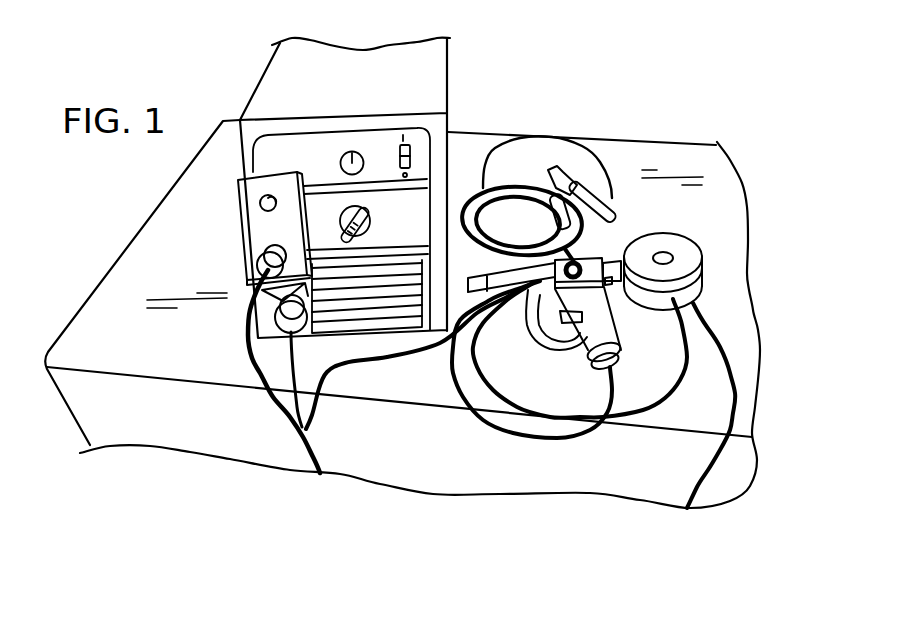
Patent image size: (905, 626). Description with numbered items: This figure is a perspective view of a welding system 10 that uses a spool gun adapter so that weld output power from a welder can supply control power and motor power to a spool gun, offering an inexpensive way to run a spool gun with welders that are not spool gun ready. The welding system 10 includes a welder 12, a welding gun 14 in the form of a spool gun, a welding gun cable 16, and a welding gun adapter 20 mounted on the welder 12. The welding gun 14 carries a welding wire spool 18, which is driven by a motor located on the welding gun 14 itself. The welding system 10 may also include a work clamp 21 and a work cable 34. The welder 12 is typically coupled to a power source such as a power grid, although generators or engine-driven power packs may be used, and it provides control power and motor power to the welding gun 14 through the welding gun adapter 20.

The welding system 10 is at (703, 58).
The welder 12 is at (433, 75).
The welding gun 14 is at (622, 258).
The welding gun cable 16 is at (740, 393).
The welding wire spool 18 is at (690, 247).
The welding gun adapter 20 is at (240, 230).
The work clamp 21 is at (607, 196).
The work cable 34 is at (488, 148).